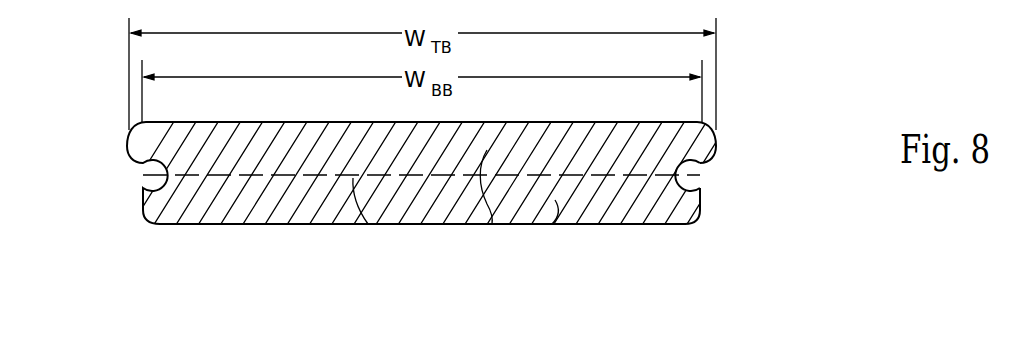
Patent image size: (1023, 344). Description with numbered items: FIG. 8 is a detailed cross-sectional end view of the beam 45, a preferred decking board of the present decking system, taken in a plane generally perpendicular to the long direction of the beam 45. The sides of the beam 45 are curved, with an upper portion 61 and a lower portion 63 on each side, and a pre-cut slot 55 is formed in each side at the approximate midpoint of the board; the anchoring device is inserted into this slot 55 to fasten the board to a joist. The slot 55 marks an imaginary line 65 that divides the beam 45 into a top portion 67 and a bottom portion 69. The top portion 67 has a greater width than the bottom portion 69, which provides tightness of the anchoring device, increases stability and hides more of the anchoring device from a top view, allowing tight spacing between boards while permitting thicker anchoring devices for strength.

The beam 45 is at (226, 240).
The upper portion 61 is at (717, 140).
The pre-cut slot 55 is at (702, 167).
The lower portion 63 is at (695, 221).
The imaginary line 65 is at (368, 225).
The top portion 67 is at (492, 225).
The bottom portion 69 is at (552, 225).